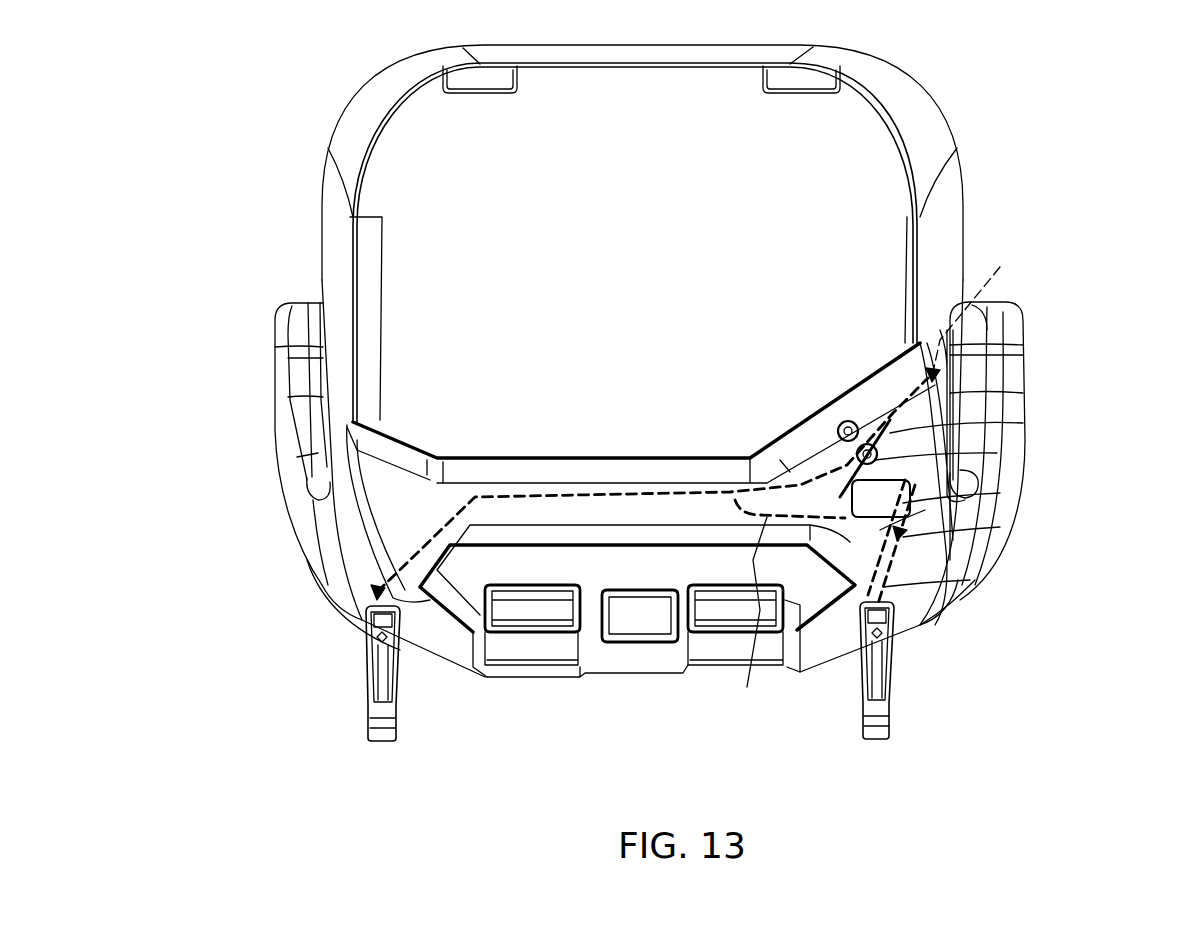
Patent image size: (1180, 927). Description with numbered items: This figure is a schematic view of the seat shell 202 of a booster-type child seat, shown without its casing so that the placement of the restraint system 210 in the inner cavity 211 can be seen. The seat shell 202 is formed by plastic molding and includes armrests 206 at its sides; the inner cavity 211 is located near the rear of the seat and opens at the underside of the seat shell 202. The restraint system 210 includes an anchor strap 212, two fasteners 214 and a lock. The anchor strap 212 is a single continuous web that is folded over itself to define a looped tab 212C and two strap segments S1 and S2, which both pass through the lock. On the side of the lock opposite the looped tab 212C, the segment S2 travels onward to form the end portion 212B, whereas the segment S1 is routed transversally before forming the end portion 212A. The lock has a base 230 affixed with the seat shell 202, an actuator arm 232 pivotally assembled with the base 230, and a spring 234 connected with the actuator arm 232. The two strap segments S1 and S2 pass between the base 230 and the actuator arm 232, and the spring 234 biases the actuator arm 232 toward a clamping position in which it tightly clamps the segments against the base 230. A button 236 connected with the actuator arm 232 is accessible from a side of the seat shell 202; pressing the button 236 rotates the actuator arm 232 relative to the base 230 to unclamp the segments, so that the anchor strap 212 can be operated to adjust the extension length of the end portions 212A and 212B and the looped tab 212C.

The seat shell 202 is at (878, 93).
The armrests 206 is at (280, 378).
The restraint system 210 is at (900, 535).
The inner cavity 211 is at (545, 545).
The anchor strap 212 is at (465, 455).
The end portion 212A is at (327, 583).
The end portion 212B is at (930, 560).
The looped tab 212C is at (981, 310).
The fasteners 214 is at (380, 742).
The base 230 is at (838, 420).
The actuator arm 232 is at (905, 447).
The spring 234 is at (925, 472).
The button 236 is at (905, 510).
The strap segment S1 is at (608, 490).
The strap segment S2 is at (748, 614).